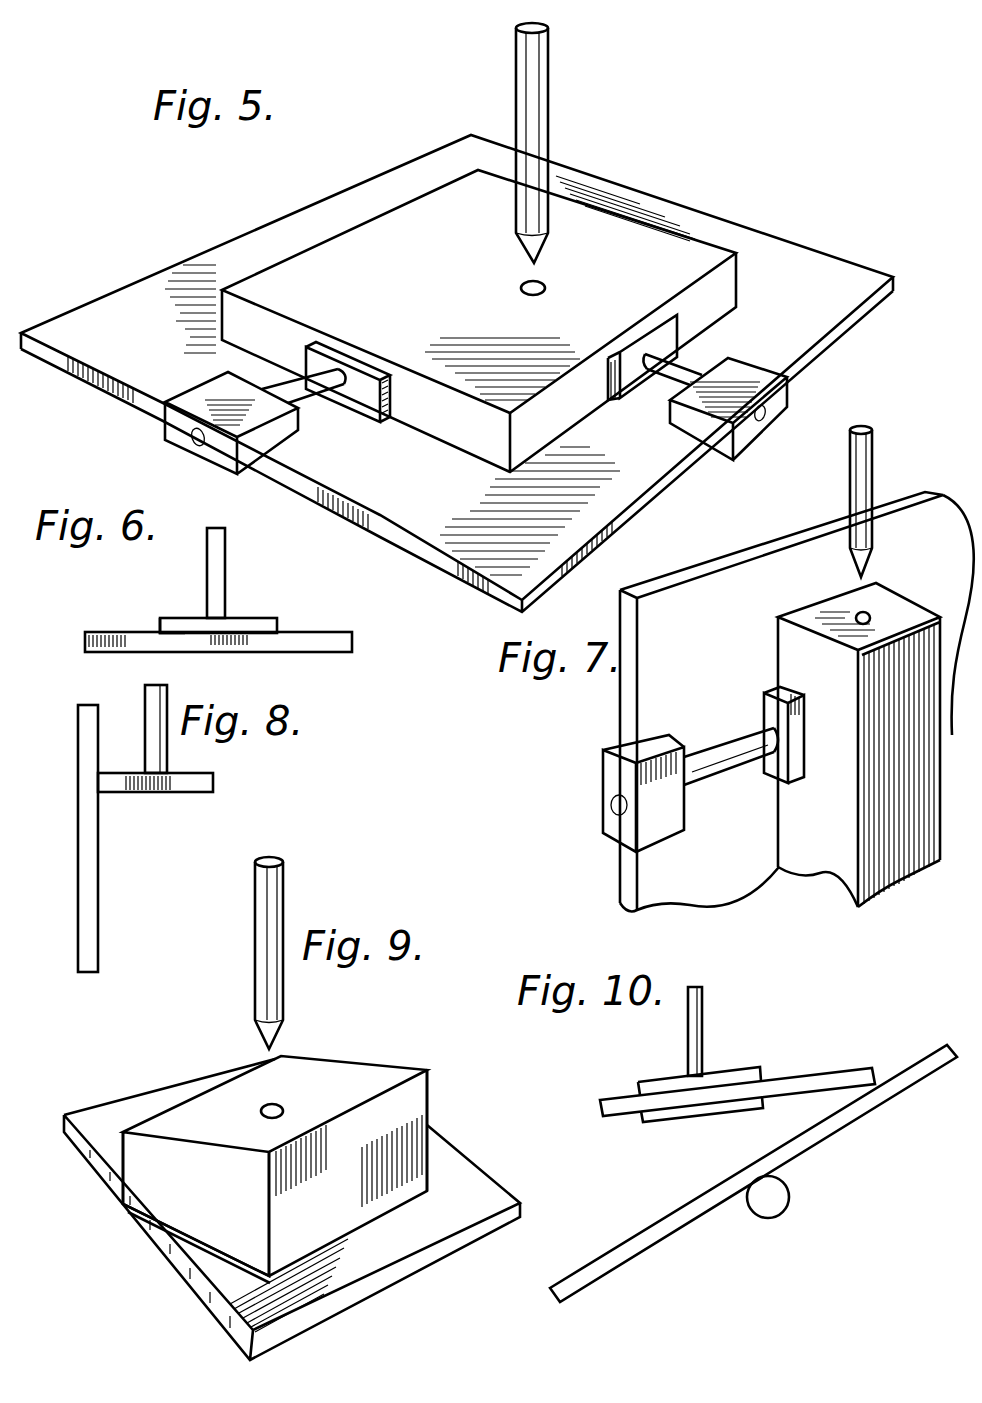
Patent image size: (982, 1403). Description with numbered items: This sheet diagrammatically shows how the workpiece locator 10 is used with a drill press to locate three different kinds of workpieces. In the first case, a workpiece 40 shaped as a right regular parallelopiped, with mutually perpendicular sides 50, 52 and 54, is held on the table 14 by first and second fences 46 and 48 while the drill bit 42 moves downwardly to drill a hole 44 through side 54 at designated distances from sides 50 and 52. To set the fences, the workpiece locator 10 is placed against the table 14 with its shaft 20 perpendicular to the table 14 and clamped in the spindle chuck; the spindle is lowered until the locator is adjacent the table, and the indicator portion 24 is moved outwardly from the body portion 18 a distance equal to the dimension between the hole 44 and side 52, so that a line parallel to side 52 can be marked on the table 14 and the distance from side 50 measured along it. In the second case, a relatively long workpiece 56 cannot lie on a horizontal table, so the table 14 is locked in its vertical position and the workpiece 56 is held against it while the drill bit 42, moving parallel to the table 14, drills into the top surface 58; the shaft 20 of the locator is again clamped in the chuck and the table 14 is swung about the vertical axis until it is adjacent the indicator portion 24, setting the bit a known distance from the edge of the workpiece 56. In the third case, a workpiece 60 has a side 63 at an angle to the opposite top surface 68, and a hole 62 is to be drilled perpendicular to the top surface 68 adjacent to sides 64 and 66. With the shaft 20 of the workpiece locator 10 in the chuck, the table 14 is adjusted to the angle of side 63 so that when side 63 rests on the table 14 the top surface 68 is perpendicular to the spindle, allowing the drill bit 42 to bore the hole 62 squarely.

In FIG. 6, the workpiece locator 10 is at (264, 597).
In FIG. 8, the workpiece locator 10 is at (228, 777).
In FIG. 10, the workpiece locator 10 is at (781, 1052).
In FIG. 5, the table 14 is at (748, 236).
In FIG. 6, the table 14 is at (352, 633).
In FIG. 8, the table 14 is at (97, 866).
In FIG. 7, the table 14 is at (706, 533).
In FIG. 9, the table 14 is at (88, 1115).
In FIG. 10, the table 14 is at (640, 1195).
In FIG. 6, the body portion 18 is at (163, 618).
In FIG. 6, the shaft 20 is at (228, 557).
In FIG. 8, the shaft 20 is at (146, 688).
In FIG. 10, the shaft 20 is at (700, 1004).
In FIG. 6, the indicator portion 24 is at (279, 618).
In FIG. 8, the indicator portion 24 is at (110, 772).
In FIG. 10, the indicator portion 24 is at (875, 1076).
In FIG. 5, the workpiece 40 is at (262, 210).
In FIG. 5, the drill bit 42 is at (518, 48).
In FIG. 7, the drill bit 42 is at (864, 477).
In FIG. 9, the drill bit 42 is at (266, 916).
In FIG. 5, the hole 44 is at (520, 288).
In FIG. 5, the first fence 46 is at (215, 446).
In FIG. 5, the second fence 48 is at (745, 433).
In FIG. 5, the side 50 is at (465, 437).
In FIG. 5, the side 52 is at (725, 286).
In FIG. 5, the side 54 is at (604, 230).
In FIG. 7, the workpiece 56 is at (945, 530).
In FIG. 7, the top surface 58 is at (858, 612).
In FIG. 9, the workpiece 60 is at (204, 996).
In FIG. 9, the hole 62 is at (282, 1107).
In FIG. 9, the side 63 is at (210, 1186).
In FIG. 9, the side 64 is at (167, 1246).
In FIG. 9, the side 66 is at (416, 1139).
In FIG. 9, the top surface 68 is at (409, 1068).